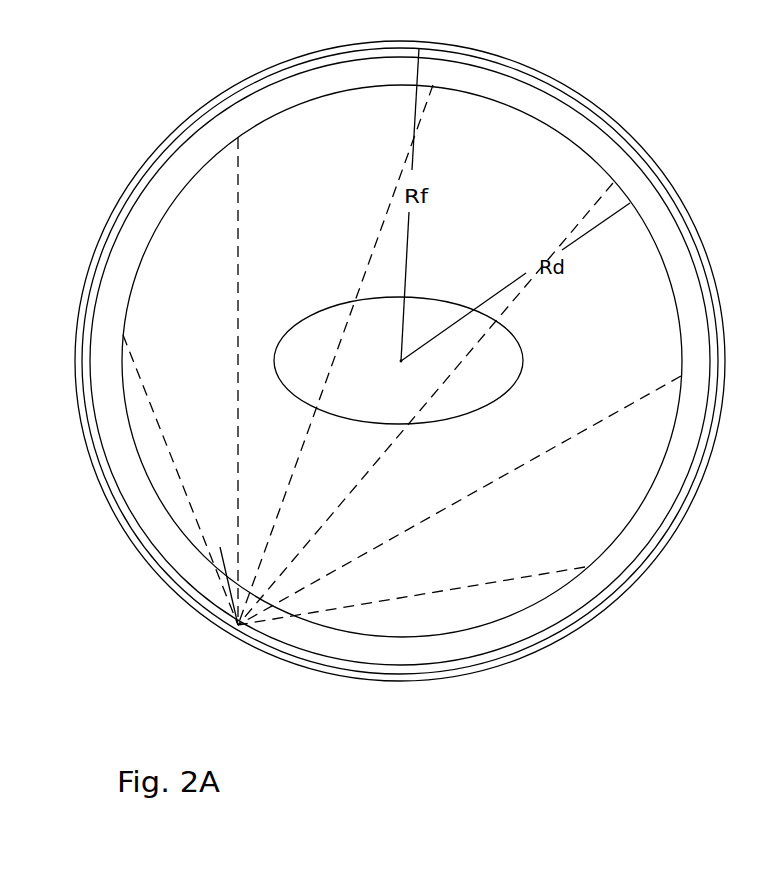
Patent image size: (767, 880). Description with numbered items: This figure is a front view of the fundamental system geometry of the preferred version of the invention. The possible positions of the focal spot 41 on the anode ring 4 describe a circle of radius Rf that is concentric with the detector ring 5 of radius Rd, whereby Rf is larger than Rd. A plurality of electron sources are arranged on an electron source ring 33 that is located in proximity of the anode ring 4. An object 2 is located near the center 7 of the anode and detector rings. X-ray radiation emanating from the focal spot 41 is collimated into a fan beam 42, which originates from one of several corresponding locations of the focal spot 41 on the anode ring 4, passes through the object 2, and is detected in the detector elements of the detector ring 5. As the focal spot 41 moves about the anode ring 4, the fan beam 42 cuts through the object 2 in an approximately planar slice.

The object 2 is at (467, 413).
The anode ring 4 is at (400, 361).
The electron source ring 33 is at (400, 361).
The detector ring 5 is at (535, 569).
The center 7 is at (401, 361).
The focal spot 41 is at (152, 644).
The fan beam 42 is at (368, 557).